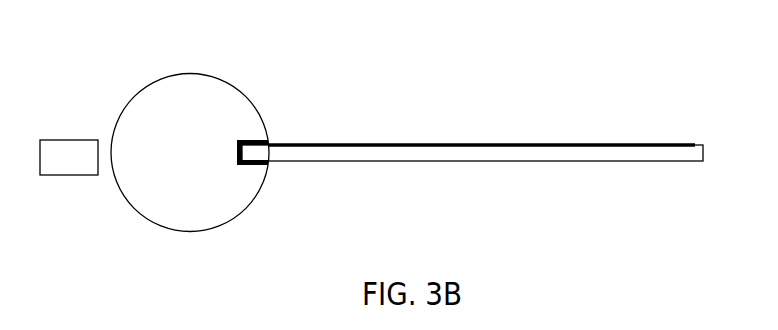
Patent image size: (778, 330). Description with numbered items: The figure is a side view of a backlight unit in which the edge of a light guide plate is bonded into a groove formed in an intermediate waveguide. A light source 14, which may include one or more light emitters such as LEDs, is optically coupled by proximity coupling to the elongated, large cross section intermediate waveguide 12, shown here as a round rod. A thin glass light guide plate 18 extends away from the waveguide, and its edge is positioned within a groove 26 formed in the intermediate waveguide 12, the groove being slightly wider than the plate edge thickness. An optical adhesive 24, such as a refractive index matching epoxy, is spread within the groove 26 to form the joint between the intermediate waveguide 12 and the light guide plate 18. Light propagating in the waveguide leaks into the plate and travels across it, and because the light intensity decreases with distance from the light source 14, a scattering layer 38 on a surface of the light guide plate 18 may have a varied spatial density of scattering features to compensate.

The intermediate waveguide 12 is at (190, 73).
The light source 14 is at (65, 140).
The light guide plate 18 is at (386, 155).
The optical adhesive 24 is at (268, 165).
The groove 26 is at (243, 140).
The scattering layer 38 is at (656, 145).